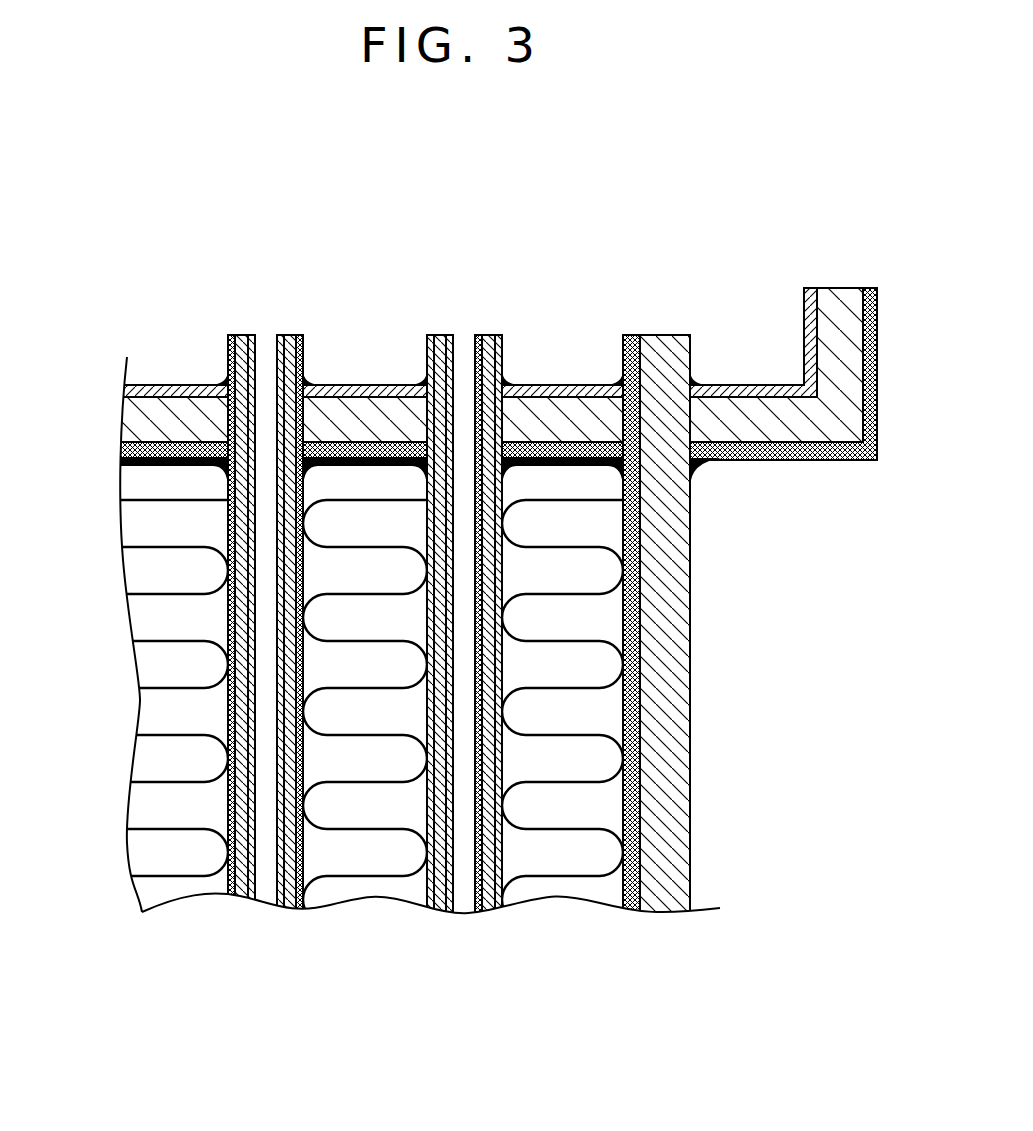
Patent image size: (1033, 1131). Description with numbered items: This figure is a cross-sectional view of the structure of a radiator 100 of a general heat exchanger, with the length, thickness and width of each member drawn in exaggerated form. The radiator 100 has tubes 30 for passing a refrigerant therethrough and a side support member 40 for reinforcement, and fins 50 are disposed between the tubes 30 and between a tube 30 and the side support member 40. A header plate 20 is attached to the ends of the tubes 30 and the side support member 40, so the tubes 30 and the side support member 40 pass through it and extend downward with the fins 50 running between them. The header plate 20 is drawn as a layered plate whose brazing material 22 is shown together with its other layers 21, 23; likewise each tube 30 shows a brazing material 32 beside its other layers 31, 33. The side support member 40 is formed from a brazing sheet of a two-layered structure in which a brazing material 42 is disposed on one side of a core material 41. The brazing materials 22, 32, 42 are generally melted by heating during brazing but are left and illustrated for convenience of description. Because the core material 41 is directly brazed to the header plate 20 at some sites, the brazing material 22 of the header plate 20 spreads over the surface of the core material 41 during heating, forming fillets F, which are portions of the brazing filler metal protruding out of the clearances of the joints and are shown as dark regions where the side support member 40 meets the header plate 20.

The radiator 100 is at (536, 172).
The header plate 20 is at (98, 365).
The base layer of core plate 21 is at (160, 418).
The brazing material 22 is at (150, 445).
The brazing material layer of core plate 23 is at (150, 392).
The tube 30 is at (307, 294).
The core material of tube 31 is at (243, 335).
The brazing material 32 is at (232, 332).
The brazing material layer of tube 33 is at (252, 332).
The side support member 40 is at (690, 294).
The core material 41 is at (662, 350).
The brazing material 42 is at (630, 335).
The fin 50 is at (358, 880).
The fillet F is at (696, 376).